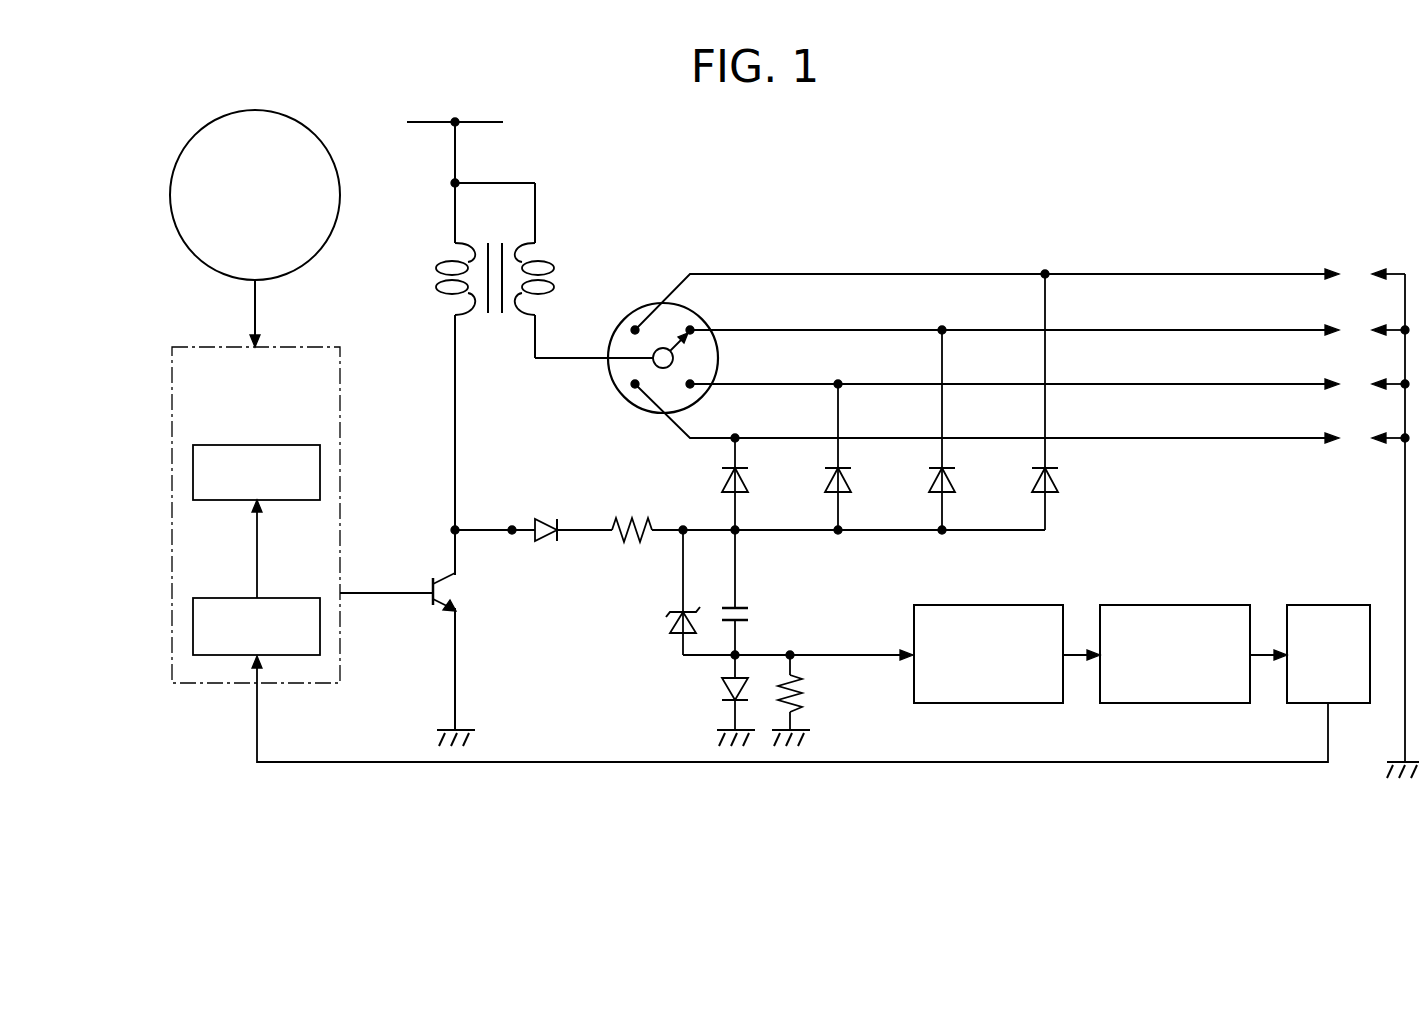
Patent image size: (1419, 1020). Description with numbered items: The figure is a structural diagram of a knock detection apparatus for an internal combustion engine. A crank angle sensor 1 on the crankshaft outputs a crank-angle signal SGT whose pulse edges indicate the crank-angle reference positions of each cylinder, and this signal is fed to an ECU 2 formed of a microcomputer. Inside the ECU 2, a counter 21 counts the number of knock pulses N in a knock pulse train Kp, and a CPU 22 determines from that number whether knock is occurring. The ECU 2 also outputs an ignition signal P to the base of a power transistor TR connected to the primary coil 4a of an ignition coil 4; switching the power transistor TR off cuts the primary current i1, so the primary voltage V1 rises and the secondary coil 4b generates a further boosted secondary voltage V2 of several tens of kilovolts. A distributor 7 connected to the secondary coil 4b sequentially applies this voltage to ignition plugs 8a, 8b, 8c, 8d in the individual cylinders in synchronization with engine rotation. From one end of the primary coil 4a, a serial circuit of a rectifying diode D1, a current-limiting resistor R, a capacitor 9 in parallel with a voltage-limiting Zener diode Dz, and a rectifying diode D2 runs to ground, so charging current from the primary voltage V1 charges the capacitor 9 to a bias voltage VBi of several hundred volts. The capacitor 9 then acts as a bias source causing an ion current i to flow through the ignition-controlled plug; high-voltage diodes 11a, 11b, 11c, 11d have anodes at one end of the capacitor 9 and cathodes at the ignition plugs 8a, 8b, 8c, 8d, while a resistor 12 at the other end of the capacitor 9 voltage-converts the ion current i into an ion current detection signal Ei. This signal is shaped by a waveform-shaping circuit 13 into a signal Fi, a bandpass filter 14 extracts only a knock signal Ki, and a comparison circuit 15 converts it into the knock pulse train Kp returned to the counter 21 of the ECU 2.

The crank angle sensor 1 is at (172, 194).
The crank-angle signal SGT is at (257, 304).
The ECU 2 is at (172, 401).
The CPU 22 is at (193, 474).
The counter 21 is at (193, 630).
The number of knock pulses N is at (259, 578).
The knock pulse train Kp is at (364, 762).
The ignition coil 4 is at (495, 218).
The primary coil 4a is at (440, 268).
The secondary coil 4b is at (552, 268).
The primary voltage V1 is at (457, 385).
The secondary voltage V2 is at (569, 360).
The primary current i1 is at (410, 446).
The distributor 7 is at (648, 305).
The ignition plug 8a is at (1360, 436).
The ignition plug 8b is at (1360, 382).
The ignition plug 8c is at (1360, 327).
The ignition plug 8d is at (1360, 272).
The power transistor TR is at (440, 608).
The ignition signal P is at (390, 592).
The rectifying diode D1 is at (547, 520).
The current-limiting resistor R is at (632, 520).
The high-voltage diode 11a is at (722, 482).
The high-voltage diode 11b is at (825, 482).
The high-voltage diode 11c is at (929, 482).
The high-voltage diode 11d is at (1032, 482).
The voltage-limiting Zener diode Dz is at (668, 623).
The bias voltage VBi is at (737, 548).
The capacitor 9 is at (742, 606).
The ion current i is at (748, 652).
The ion current detection signal Ei is at (870, 652).
The rectifying diode D2 is at (722, 690).
The resistor 12 is at (806, 694).
The waveform-shaping circuit 13 is at (990, 605).
The waveform-shaped signal Fi is at (1084, 650).
The bandpass filter 14 is at (1178, 605).
The knock signal Ki is at (1268, 650).
The comparison circuit 15 is at (1330, 605).